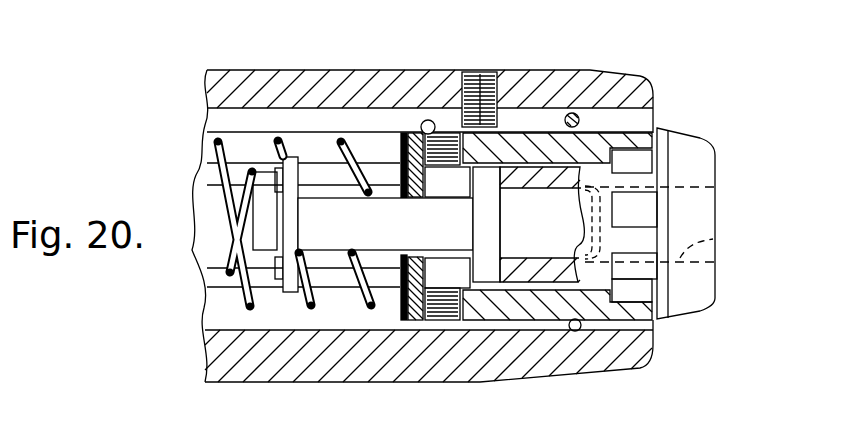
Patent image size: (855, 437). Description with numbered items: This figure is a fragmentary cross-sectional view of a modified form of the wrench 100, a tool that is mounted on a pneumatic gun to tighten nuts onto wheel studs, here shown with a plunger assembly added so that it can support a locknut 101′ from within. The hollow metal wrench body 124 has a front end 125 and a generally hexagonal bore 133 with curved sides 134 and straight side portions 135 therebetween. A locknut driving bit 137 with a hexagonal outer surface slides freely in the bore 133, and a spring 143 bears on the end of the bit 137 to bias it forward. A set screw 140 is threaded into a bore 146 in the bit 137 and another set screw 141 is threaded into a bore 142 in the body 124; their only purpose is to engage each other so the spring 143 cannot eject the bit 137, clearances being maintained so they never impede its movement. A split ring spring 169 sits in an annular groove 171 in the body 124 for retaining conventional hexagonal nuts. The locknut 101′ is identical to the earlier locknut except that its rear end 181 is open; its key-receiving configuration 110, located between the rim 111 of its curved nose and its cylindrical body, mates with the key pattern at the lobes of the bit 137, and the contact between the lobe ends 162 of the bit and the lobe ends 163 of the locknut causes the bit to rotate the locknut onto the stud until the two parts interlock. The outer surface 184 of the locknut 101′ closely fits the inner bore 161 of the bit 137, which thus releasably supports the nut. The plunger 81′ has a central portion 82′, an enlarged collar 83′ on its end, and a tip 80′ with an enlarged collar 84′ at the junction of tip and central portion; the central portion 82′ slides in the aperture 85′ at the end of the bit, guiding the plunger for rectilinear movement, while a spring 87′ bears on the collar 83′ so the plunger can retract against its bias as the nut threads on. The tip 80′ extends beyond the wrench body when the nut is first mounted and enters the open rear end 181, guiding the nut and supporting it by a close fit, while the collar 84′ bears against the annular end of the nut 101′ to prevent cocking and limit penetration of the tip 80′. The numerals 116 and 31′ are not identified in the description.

The wrench 100 is at (260, 55).
The wrench body 124 is at (318, 70).
The plunger 81′ is at (375, 130).
The bore 146 is at (430, 120).
The bore 142 is at (462, 77).
The set screw 141 is at (473, 73).
The locknut driving bit 137 is at (530, 133).
The split ring spring 169 is at (572, 113).
The lobe ends of locknut 163 is at (605, 85).
The front end 125 is at (657, 102).
The locknut 101′ is at (660, 128).
The key-receiving configuration 110 is at (638, 212).
The passage 116 is at (713, 240).
The lobe ends of bit 162 is at (658, 320).
The rim 111 is at (658, 323).
The annular groove 171 is at (578, 340).
The outer surface 184 is at (565, 330).
The rear end 181 is at (483, 292).
The housing wall 31′ is at (392, 330).
The collar 83′ is at (292, 292).
The central portion 82′ is at (295, 230).
The spring 87′ is at (230, 273).
The curved sides 134 is at (212, 170).
The hexagonal bore 133 is at (213, 318).
The side portions 135 is at (200, 212).
The spring 143 is at (216, 142).
The set screw 140 is at (439, 166).
The bore 161 is at (439, 288).
The tip 80′ is at (560, 237).
The collar 84′ is at (482, 218).
The aperture 85′ is at (416, 200).